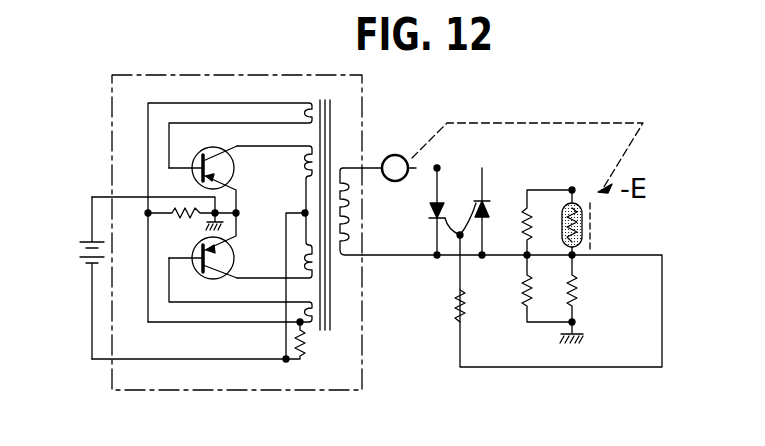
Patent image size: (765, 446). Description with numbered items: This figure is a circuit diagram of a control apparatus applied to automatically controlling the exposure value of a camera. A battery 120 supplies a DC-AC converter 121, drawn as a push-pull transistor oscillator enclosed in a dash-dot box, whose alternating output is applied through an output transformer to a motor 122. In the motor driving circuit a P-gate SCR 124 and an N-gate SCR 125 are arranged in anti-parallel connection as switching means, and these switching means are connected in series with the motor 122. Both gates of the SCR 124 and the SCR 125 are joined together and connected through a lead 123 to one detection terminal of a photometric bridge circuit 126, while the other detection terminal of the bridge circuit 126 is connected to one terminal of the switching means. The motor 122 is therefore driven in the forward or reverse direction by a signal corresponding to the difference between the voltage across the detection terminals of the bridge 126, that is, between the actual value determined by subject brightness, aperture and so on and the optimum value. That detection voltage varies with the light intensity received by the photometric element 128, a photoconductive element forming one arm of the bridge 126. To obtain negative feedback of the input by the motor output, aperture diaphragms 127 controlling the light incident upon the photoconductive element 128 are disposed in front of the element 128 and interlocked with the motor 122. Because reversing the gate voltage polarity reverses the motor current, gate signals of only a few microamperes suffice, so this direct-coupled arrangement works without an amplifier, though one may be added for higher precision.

The battery 120 is at (86, 240).
The oscillator (inverter) 121 is at (128, 74).
The motor 122 is at (391, 181).
The lead 123 is at (455, 308).
The P-gate SCR 124 is at (444, 211).
The N-gate SCR 125 is at (484, 202).
The photometric bridge circuit 126 is at (564, 272).
The aperture diaphragms 127 is at (593, 247).
The photometric element 128 is at (577, 201).